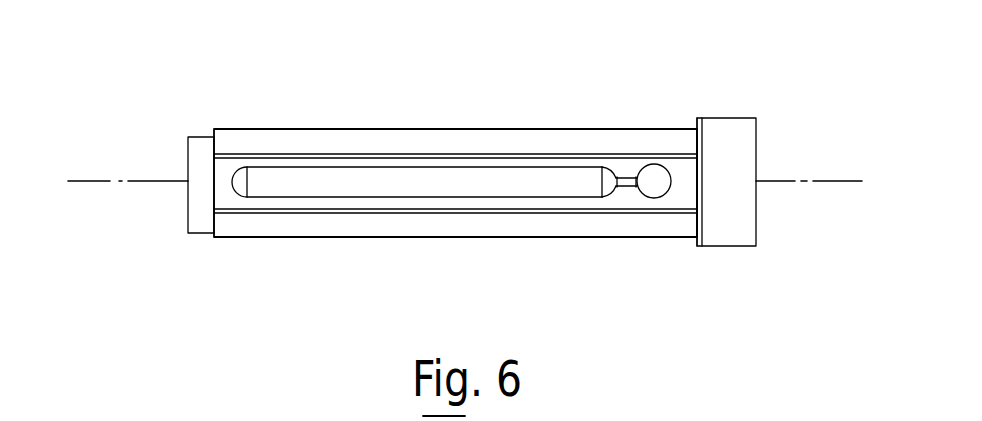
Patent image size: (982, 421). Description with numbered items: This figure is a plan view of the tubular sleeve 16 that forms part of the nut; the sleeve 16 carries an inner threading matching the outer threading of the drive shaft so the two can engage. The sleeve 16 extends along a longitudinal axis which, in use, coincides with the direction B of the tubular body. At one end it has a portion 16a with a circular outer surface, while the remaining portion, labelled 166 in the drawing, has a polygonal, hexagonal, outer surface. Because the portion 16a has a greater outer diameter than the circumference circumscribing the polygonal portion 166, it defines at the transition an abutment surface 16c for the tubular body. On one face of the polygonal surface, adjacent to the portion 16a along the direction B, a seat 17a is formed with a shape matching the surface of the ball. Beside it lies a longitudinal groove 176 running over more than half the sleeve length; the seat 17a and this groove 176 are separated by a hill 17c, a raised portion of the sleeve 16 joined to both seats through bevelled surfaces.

The tubular sleeve 16 is at (508, 157).
The sleeve body 166 is at (510, 142).
The portion with circular outer surface 16a is at (723, 143).
The abutment surface 16c is at (697, 124).
The longitudinal slot 176 is at (515, 181).
The hill 17c is at (627, 188).
The seat 17a is at (653, 184).
The direction of the tubular body B is at (827, 181).